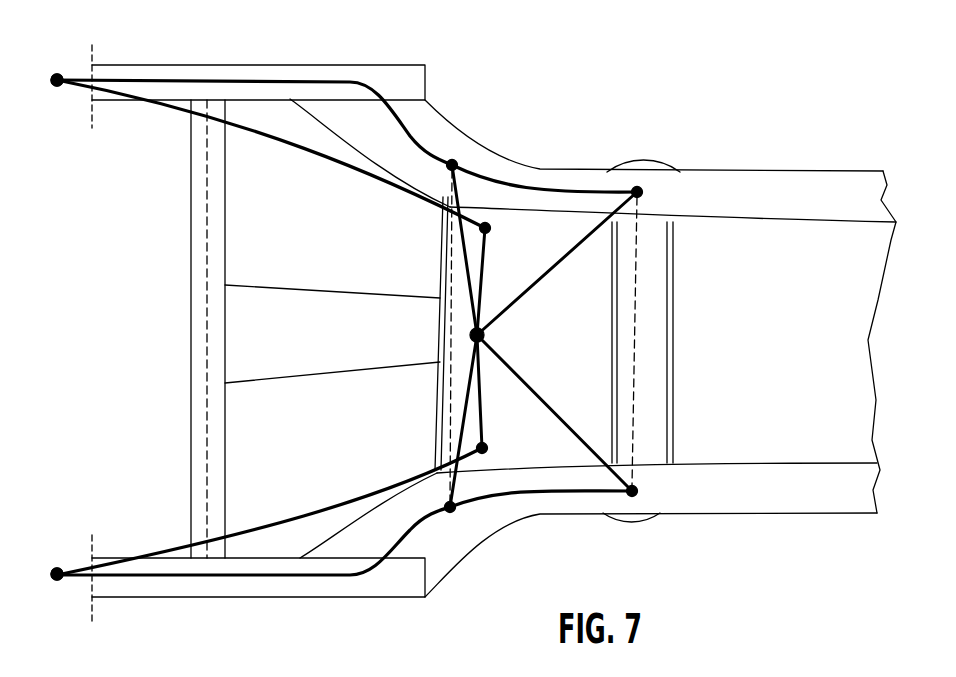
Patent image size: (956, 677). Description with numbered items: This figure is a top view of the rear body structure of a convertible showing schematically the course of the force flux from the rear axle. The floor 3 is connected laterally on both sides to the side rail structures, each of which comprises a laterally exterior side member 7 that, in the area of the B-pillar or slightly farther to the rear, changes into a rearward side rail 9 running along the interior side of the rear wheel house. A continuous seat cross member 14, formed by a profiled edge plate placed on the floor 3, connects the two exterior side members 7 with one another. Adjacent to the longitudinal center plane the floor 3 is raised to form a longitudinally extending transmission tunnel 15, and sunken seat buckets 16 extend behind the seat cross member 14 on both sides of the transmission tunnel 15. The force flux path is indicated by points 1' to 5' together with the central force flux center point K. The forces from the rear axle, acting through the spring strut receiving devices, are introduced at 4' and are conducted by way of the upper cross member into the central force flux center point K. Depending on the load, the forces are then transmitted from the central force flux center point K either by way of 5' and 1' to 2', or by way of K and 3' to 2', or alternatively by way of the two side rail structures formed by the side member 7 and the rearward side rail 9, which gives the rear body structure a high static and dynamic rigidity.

The force flux path point 1' is at (68, 313).
The force flux path end point 2' is at (66, 329).
The force flux path point 3' is at (450, 336).
The force introduction point 4' is at (564, 336).
The force flux path point 5' is at (289, 327).
The central force flux center point K is at (543, 336).
The laterally exterior side member 7 is at (232, 64).
The rearward side rail 9 is at (796, 186).
The seat cross member 14 is at (199, 225).
The floor 3 is at (291, 285).
The transmission tunnel 15 is at (250, 358).
The seat bucket 16 is at (378, 333).